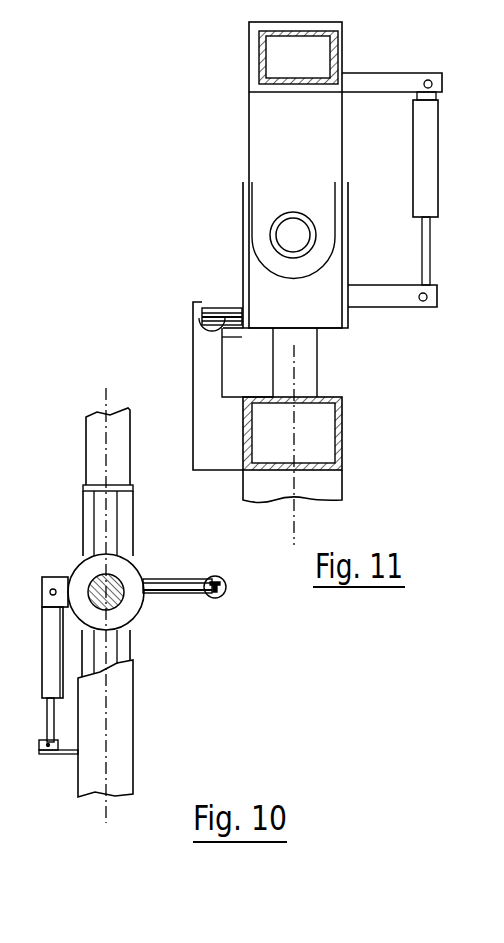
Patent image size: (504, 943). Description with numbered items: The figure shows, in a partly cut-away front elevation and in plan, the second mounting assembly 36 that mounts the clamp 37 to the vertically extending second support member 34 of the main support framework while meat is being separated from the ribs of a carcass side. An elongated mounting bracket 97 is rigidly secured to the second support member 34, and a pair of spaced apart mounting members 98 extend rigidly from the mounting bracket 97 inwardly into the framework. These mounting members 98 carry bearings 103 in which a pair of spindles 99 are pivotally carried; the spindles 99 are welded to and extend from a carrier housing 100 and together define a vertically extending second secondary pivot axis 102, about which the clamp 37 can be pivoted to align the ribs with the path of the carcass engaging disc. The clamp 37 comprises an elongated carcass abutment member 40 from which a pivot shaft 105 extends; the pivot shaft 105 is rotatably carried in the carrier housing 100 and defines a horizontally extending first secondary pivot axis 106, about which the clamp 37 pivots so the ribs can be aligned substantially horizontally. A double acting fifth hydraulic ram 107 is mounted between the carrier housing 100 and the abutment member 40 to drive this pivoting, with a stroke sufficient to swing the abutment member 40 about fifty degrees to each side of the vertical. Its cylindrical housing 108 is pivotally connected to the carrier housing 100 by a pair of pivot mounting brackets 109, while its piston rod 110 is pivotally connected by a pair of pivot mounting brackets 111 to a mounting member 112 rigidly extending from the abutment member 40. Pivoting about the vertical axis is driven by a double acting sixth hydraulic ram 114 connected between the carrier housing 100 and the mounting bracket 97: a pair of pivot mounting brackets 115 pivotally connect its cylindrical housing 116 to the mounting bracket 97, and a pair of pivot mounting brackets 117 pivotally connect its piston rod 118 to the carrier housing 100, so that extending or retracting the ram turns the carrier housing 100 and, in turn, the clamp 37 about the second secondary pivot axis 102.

In FIG. 11, the second support member 34 is at (315, 50).
In FIG. 11, the second mounting assembly 36 is at (190, 157).
In FIG. 10, the second mounting assembly 36 is at (197, 553).
In FIG. 11, the clamp 37 is at (332, 483).
In FIG. 11, the carcass abutment member 40 is at (338, 417).
In FIG. 10, the carcass abutment member 40 is at (125, 772).
In FIG. 11, the mounting bracket 97 is at (257, 42).
In FIG. 10, the mounting bracket 97 is at (82, 505).
In FIG. 11, the mounting members 98 is at (265, 128).
In FIG. 10, the mounting members 98 is at (128, 485).
In FIG. 11, the spindles 99 is at (275, 236).
In FIG. 10, the spindles 99 is at (110, 512).
In FIG. 11, the carrier housing 100 is at (242, 275).
In FIG. 10, the carrier housing 100 is at (128, 573).
In FIG. 10, the second secondary pivot axis 102 is at (105, 405).
In FIG. 11, the bearings 103 is at (292, 212).
In FIG. 11, the pivot shaft 105 is at (310, 373).
In FIG. 10, the pivot shaft 105 is at (113, 612).
In FIG. 11, the first secondary pivot axis 106 is at (294, 518).
In FIG. 11, the fifth hydraulic ram 107 is at (203, 304).
In FIG. 10, the fifth hydraulic ram 107 is at (47, 640).
In FIG. 10, the cylindrical housing 108 is at (44, 616).
In FIG. 11, the pivot mounting brackets 109 is at (233, 306).
In FIG. 10, the pivot mounting brackets 109 is at (52, 579).
In FIG. 10, the piston rod 110 is at (47, 716).
In FIG. 10, the pivot mounting brackets 111 is at (40, 750).
In FIG. 11, the mounting member 112 is at (198, 365).
In FIG. 10, the mounting member 112 is at (62, 754).
In FIG. 11, the sixth hydraulic ram 114 is at (433, 160).
In FIG. 10, the sixth hydraulic ram 114 is at (228, 589).
In FIG. 11, the pivot mounting brackets 115 is at (399, 82).
In FIG. 11, the cylindrical housing 116 is at (430, 128).
In FIG. 11, the pivot mounting brackets 117 is at (388, 297).
In FIG. 10, the pivot mounting brackets 117 is at (180, 594).
In FIG. 11, the piston rod 118 is at (428, 247).